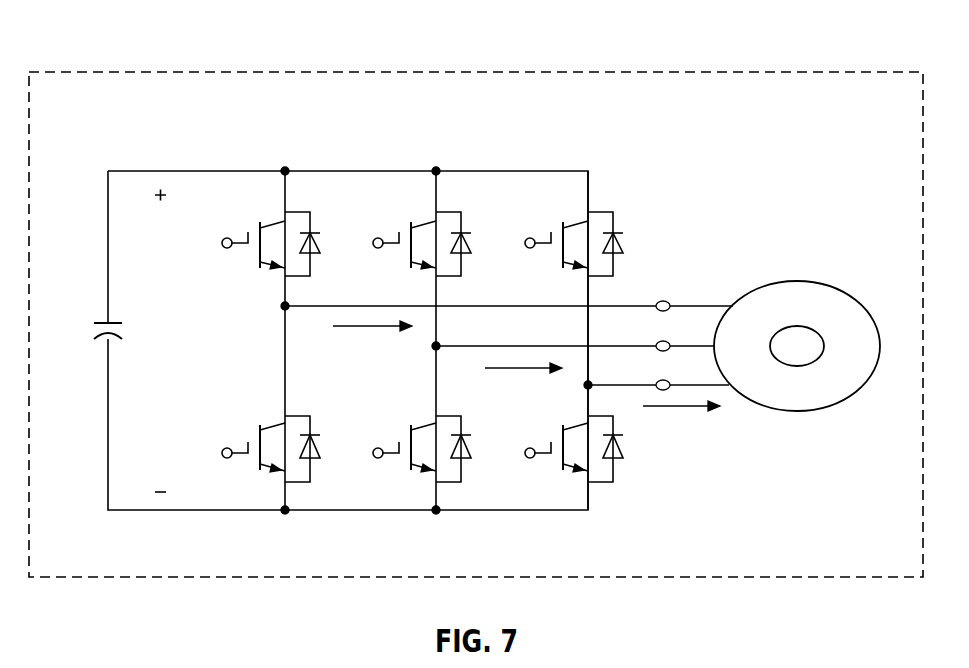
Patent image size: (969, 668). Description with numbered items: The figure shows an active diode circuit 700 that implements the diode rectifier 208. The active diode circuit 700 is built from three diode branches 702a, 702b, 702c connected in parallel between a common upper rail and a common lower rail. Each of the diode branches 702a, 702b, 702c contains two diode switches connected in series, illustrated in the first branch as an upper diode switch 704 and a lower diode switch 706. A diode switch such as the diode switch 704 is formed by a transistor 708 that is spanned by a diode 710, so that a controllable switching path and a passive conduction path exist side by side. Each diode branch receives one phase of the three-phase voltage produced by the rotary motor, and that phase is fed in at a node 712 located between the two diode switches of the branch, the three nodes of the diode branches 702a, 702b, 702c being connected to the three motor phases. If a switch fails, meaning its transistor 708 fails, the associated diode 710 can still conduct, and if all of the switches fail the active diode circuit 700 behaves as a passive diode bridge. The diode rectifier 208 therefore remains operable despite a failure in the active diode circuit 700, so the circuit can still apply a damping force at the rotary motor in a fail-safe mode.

The active diode circuit 700 is at (106, 28).
The diode rectifier 208 is at (614, 66).
The diode branch 702a is at (283, 187).
The diode branch 702b is at (434, 187).
The diode branch 702c is at (586, 187).
The diode switch 704 is at (200, 212).
The diode switch 706 is at (210, 419).
The transistor 708 is at (222, 240).
The diode 710 is at (320, 250).
The node 712 is at (283, 306).